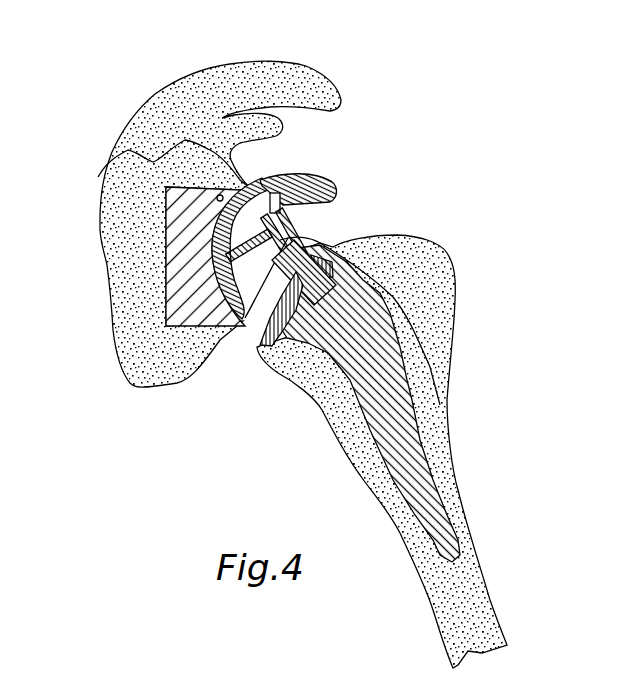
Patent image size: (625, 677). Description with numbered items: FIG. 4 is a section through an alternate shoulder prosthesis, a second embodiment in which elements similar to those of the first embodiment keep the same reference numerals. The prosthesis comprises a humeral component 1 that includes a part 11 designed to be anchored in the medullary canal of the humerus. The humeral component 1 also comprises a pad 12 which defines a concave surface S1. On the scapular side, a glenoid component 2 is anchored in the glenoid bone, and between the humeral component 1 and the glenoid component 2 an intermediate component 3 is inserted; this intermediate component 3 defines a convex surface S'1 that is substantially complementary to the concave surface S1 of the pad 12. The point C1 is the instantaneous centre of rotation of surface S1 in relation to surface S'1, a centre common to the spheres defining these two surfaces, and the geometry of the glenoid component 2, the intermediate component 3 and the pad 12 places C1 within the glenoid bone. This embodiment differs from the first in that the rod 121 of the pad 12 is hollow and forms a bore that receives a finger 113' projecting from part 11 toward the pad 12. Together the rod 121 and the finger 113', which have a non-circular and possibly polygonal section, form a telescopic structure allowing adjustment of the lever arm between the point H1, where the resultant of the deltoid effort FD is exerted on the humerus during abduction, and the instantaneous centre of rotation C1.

The humeral component 1 is at (388, 451).
The part 11 is at (398, 317).
The pad 12 is at (395, 262).
The glenoid component 2 is at (185, 298).
The intermediate component 3 is at (265, 177).
The finger 113' is at (272, 338).
The rod 121 is at (262, 312).
The instantaneous centre of rotation C1 is at (222, 118).
The concave surface S1 is at (212, 224).
The convex surface S'1 is at (353, 178).
The point of force application H1 is at (437, 245).
The deltoid effort FD is at (437, 245).